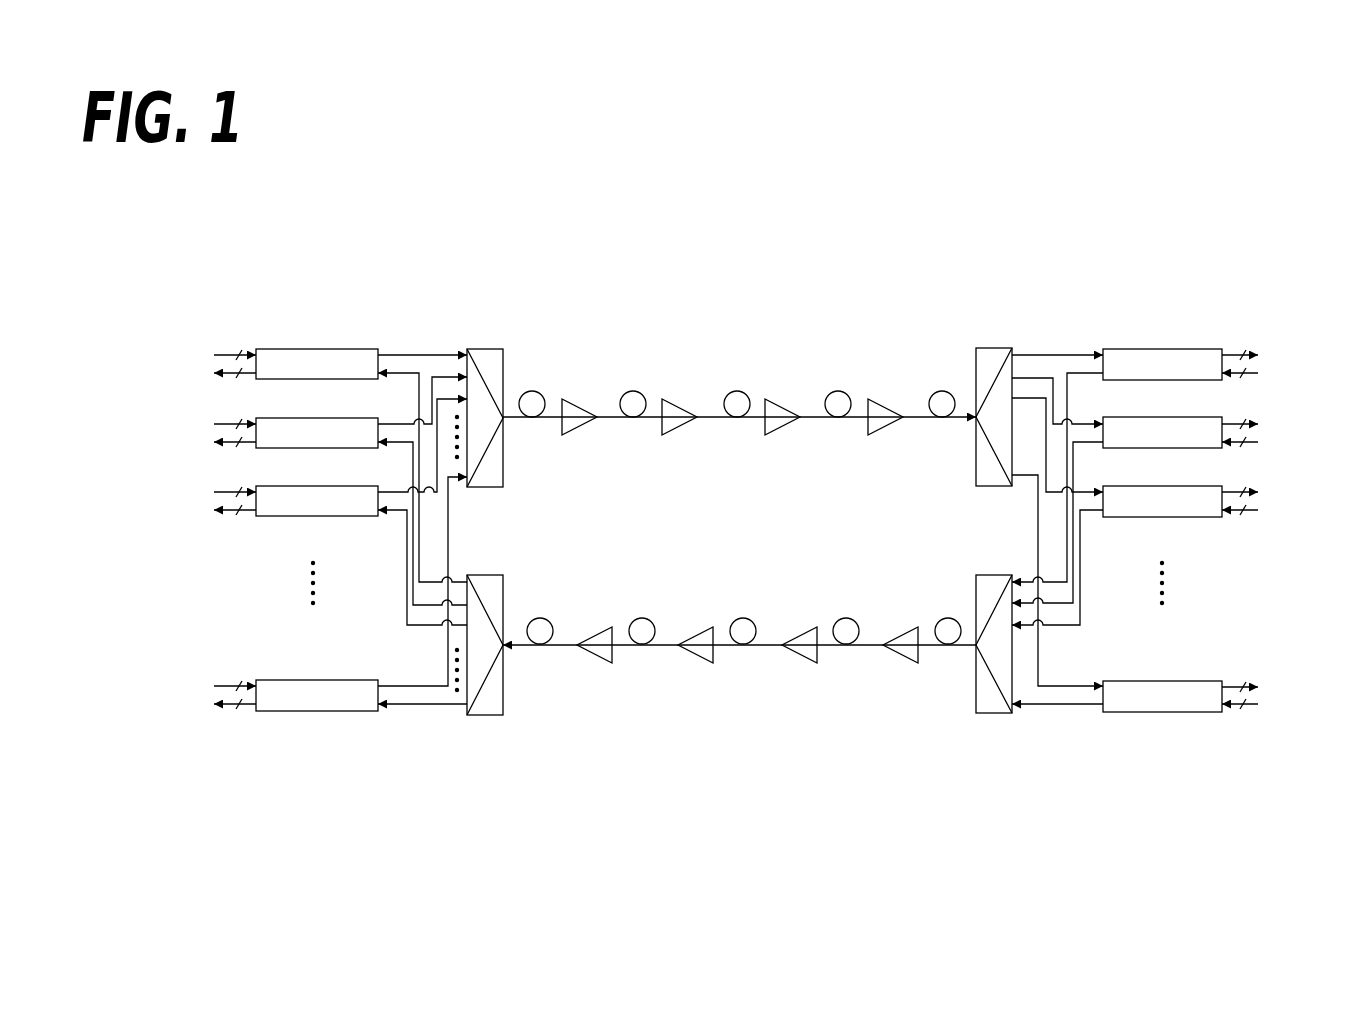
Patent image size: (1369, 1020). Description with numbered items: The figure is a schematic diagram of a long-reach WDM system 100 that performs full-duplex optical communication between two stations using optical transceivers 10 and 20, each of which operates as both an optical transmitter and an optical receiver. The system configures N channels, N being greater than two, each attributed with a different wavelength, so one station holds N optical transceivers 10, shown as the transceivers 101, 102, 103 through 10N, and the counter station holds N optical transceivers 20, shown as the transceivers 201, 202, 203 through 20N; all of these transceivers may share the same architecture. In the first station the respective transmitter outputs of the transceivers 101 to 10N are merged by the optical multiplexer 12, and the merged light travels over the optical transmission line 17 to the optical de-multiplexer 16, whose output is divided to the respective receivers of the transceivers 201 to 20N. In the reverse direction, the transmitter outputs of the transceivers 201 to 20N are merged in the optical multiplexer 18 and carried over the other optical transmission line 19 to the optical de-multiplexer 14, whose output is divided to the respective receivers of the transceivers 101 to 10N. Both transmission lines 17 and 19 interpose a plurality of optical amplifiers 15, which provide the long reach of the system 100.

The WDM system 100 is at (1262, 275).
The optical transceiver 10 is at (277, 513).
The optical transceiver 10_1 101 is at (312, 346).
The optical transceiver 10_2 102 is at (312, 415).
The optical transceiver 10_3 103 is at (312, 483).
The optical transceiver 10_N 10N is at (312, 677).
The optical multiplexer 12 is at (485, 348).
The optical de-multiplexer 14 is at (485, 716).
The optical amplifier 15 is at (780, 399).
The optical de-multiplexer 16 is at (996, 347).
The optical transmission line 17 is at (752, 419).
The optical multiplexer 18 is at (997, 715).
The optical transmission line 19 is at (870, 647).
The optical transceiver 20 is at (1214, 515).
The optical transceiver 20_1 201 is at (1158, 346).
The optical transceiver 20_2 202 is at (1158, 414).
The optical transceiver 20_3 203 is at (1158, 483).
The optical transceiver 20_N 20N is at (1158, 679).